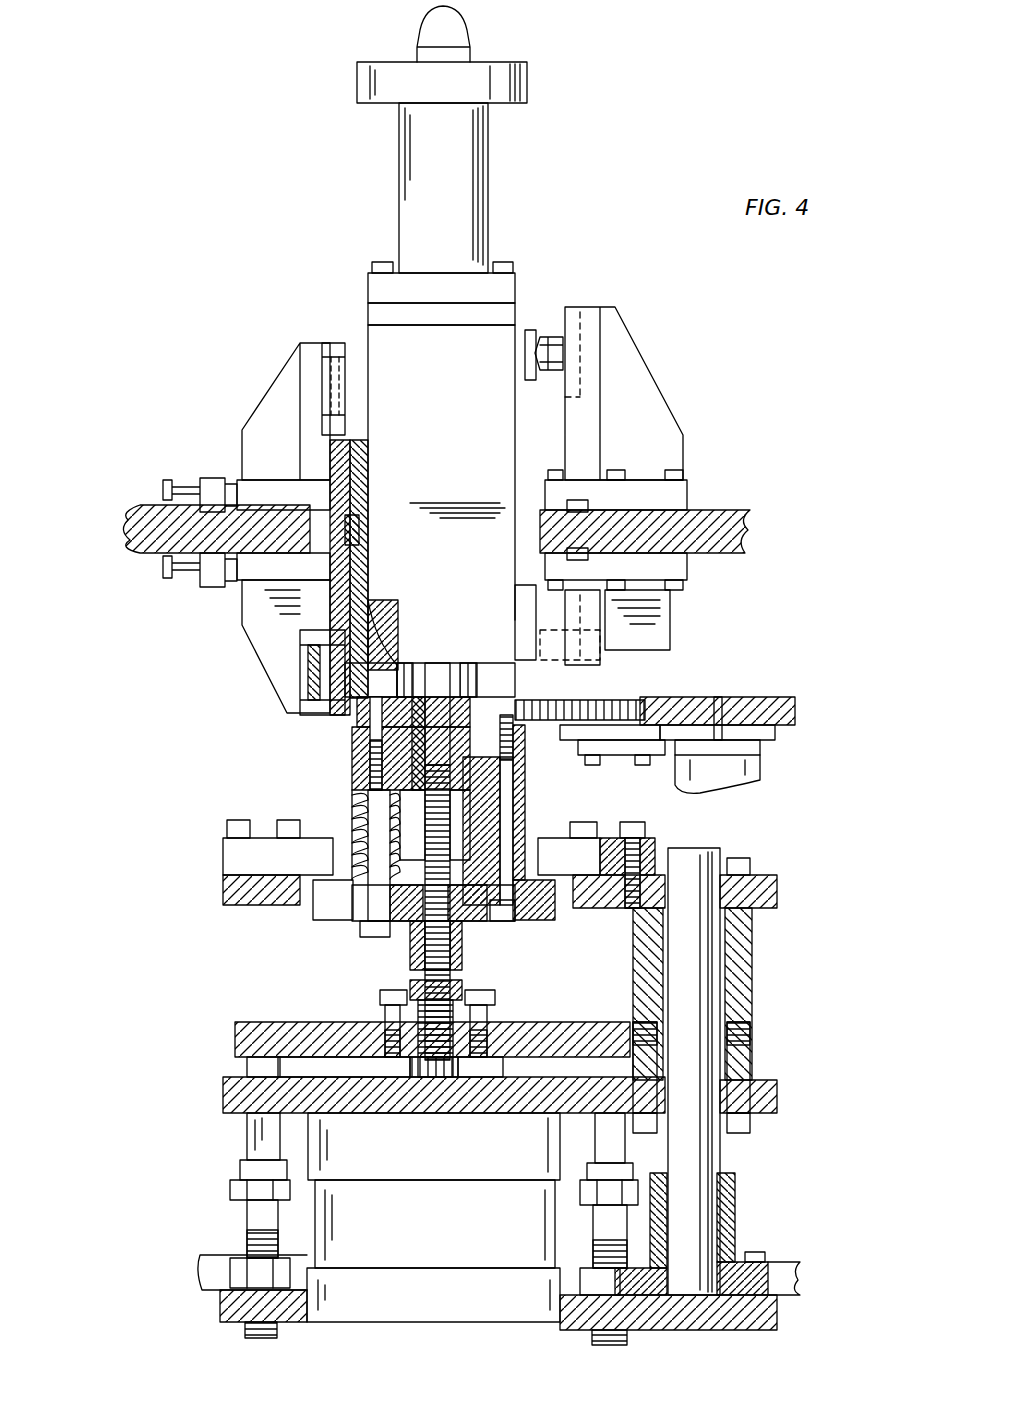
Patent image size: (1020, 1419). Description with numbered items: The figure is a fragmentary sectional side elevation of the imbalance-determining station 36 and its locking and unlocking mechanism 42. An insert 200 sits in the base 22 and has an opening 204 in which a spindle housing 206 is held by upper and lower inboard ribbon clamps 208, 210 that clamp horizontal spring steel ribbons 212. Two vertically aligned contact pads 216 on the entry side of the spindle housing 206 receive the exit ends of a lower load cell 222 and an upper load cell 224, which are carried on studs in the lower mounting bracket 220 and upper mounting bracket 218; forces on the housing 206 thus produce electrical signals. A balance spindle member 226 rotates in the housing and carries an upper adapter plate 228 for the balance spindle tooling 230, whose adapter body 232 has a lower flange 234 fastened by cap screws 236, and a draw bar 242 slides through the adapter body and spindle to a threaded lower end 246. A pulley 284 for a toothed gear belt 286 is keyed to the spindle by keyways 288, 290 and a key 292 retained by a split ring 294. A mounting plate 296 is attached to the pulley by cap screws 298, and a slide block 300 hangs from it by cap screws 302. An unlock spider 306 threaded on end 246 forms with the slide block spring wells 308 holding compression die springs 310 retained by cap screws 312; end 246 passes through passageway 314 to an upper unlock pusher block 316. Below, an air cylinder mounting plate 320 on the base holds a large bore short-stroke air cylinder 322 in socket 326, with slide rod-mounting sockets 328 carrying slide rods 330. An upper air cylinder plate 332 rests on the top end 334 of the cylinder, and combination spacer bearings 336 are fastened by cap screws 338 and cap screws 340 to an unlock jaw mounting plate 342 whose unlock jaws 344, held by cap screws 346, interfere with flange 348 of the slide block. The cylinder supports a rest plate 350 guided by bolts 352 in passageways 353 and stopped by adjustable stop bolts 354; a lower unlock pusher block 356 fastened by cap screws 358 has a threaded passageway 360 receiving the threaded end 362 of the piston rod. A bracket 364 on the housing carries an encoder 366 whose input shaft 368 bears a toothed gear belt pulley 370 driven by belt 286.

The base 22 is at (210, 1270).
The imbalance-determining station 36 is at (633, 205).
The locking and unlocking mechanism 42 is at (133, 989).
The insert 200 is at (712, 520).
The opening 204 is at (535, 520).
The spindle housing 206 is at (470, 419).
The upper inboard ribbon clamp 208 is at (268, 432).
The lower inboard ribbon clamp 210 is at (262, 648).
The spring steel ribbons 212 is at (325, 378).
The contact pads 216 is at (530, 330).
The upper mounting bracket 218 is at (593, 327).
The lower mounting bracket 220 is at (598, 604).
The lower load cell 222 is at (600, 652).
The upper load cell 224 is at (565, 354).
The balance spindle member 226 is at (414, 685).
The upper adapter plate 228 is at (372, 312).
The balance spindle tooling 230 is at (518, 183).
The adapter body 232 is at (411, 176).
The lower flange 234 is at (375, 278).
The cap screws 236 is at (505, 266).
The draw bar 242 is at (436, 700).
The lower end 246 is at (440, 940).
The pulley 284 is at (392, 665).
The toothed gear belt 286 is at (620, 702).
The keyway 288 is at (468, 688).
The keyway 290 is at (500, 700).
The key 292 is at (520, 742).
The split ring 294 is at (372, 762).
The mounting plate 296 is at (355, 730).
The cap screws 298 is at (368, 748).
The slide block 300 is at (524, 792).
The cap screws 302 is at (512, 925).
The unlock spider 306 is at (370, 921).
The spring wells 308 is at (352, 802).
The compression die springs 310 is at (352, 814).
The cap screws 312 is at (402, 918).
The passageway 314 is at (415, 935).
The upper unlock pusher block 316 is at (408, 963).
The air cylinder mounting plate 320 is at (222, 1305).
The air cylinder 322 is at (452, 1229).
The socket 326 is at (570, 1292).
The slide rod-mounting sockets 328 is at (680, 1246).
The slide rods 330 is at (697, 992).
The upper air cylinder plate 332 is at (222, 1096).
The top end 334 is at (305, 1098).
The combination spacer bearings 336 is at (797, 952).
The cap screws 338 is at (752, 1126).
The cap screws 340 is at (745, 868).
The unlock jaw mounting plate 342 is at (240, 908).
The unlock jaws 344 is at (247, 852).
The cap screws 346 is at (642, 830).
The flange 348 is at (580, 875).
The rest plate 350 is at (240, 1036).
The bolts 352 is at (250, 1150).
The passageways 353 is at (248, 1127).
The adjustable stop bolts 354 is at (246, 1207).
The lower unlock pusher block 356 is at (458, 990).
The cap screws 358 is at (392, 1020).
The threaded passageway 360 is at (455, 1065).
The threaded end 362 is at (482, 1020).
The bracket 364 is at (620, 690).
The encoder 366 is at (750, 772).
The input shaft 368 is at (718, 705).
The toothed gear belt pulley 370 is at (760, 700).